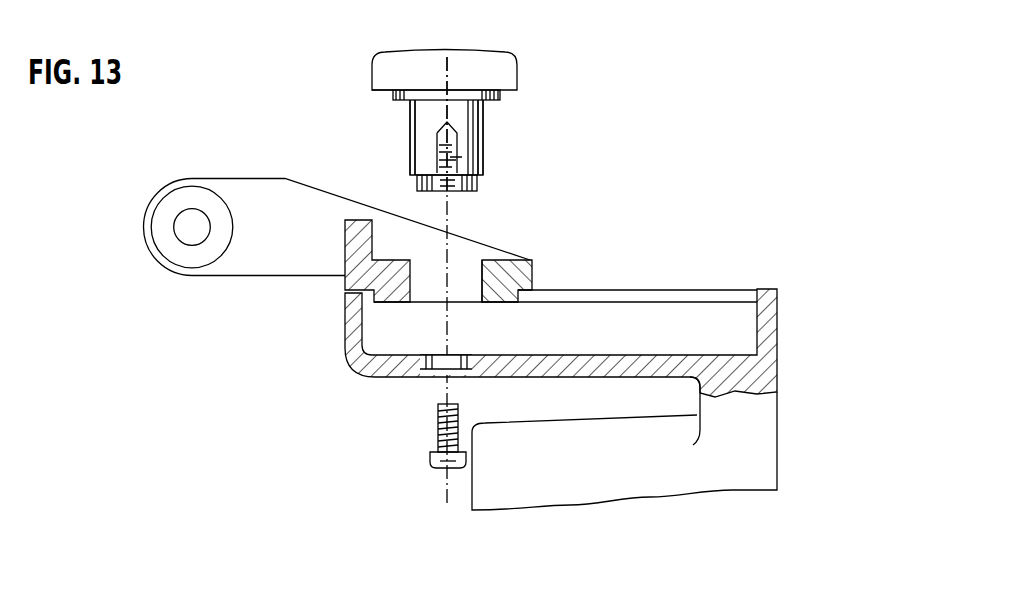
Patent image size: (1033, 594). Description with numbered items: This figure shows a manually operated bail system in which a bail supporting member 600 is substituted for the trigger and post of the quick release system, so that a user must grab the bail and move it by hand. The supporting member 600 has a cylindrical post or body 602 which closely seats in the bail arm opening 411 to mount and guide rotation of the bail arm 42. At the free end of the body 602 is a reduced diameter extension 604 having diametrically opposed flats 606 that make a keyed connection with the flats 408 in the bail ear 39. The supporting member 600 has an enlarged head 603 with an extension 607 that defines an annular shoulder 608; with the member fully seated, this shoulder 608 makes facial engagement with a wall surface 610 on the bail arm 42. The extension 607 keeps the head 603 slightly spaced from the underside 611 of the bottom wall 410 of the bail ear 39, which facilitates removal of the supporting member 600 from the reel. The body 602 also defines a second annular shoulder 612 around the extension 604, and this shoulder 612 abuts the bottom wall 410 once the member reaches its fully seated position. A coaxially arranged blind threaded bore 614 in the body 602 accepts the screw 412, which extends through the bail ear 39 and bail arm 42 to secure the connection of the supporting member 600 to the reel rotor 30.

The bail supporting member 600 is at (582, 136).
The cylindrical post or body 602 is at (481, 147).
The enlarged head 603 is at (434, 60).
The extension 604 is at (477, 185).
The flats 606 is at (417, 183).
The extension 607 is at (393, 97).
The annular shoulder 608 is at (490, 123).
The wall surface 610 is at (386, 250).
The underside 611 is at (500, 99).
The second annular shoulder 612 is at (408, 148).
The blind threaded bore 614 is at (487, 167).
The bail arm 42 is at (235, 190).
The bail ear 39 is at (347, 315).
The bottom wall 410 is at (360, 348).
The bail arm opening 411 is at (466, 262).
The flats 408 is at (440, 360).
The screw 412 is at (432, 459).
The reel rotor 30 is at (720, 478).